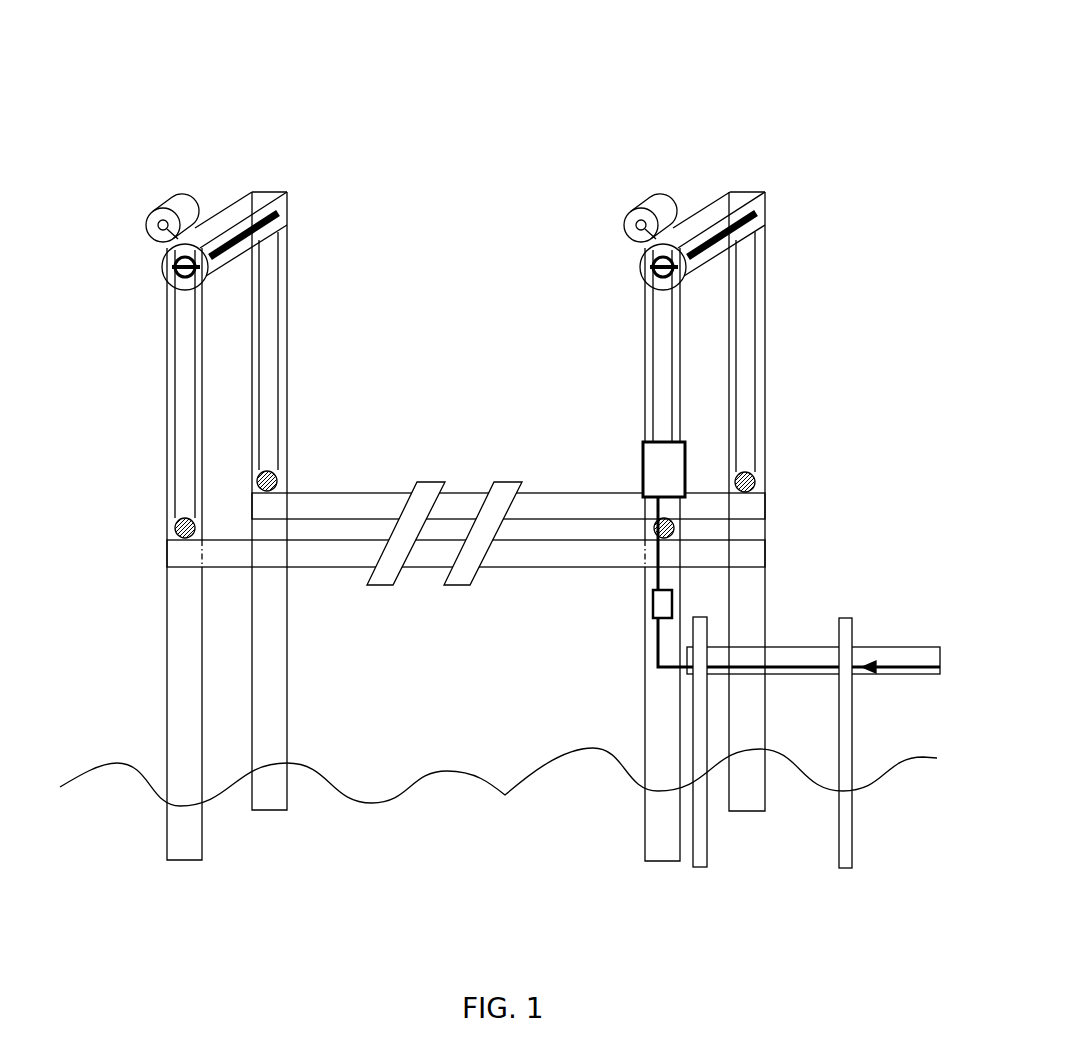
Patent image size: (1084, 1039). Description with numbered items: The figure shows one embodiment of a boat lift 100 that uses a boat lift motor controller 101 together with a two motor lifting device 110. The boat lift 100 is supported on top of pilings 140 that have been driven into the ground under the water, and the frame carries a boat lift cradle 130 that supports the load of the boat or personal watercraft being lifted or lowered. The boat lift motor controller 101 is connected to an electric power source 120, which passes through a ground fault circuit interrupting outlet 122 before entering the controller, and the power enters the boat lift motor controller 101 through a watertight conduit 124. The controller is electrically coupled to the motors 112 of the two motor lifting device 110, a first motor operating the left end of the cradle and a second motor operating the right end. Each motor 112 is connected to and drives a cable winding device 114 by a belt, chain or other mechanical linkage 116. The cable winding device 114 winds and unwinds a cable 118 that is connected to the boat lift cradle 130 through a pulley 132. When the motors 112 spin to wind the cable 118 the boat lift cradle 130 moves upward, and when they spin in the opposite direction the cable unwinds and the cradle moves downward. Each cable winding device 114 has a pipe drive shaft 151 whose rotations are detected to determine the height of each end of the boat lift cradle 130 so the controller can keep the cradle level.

The boat lift 100 is at (772, 93).
The two motor lifting device 110 is at (140, 437).
The motor 112 is at (181, 195).
The cable winding device 114 is at (290, 211).
The mechanical linkage 116 is at (175, 240).
The cable 118 is at (283, 332).
The pipe drive shaft 151 is at (195, 277).
The pulley 132 is at (277, 477).
The boat lift cradle 130 is at (428, 482).
The piling 140 is at (287, 637).
The boat lift motor controller 101 is at (643, 462).
The watertight conduit 124 is at (663, 502).
The ground fault circuit interrupting outlet 122 is at (652, 600).
The electric power source 120 is at (875, 672).